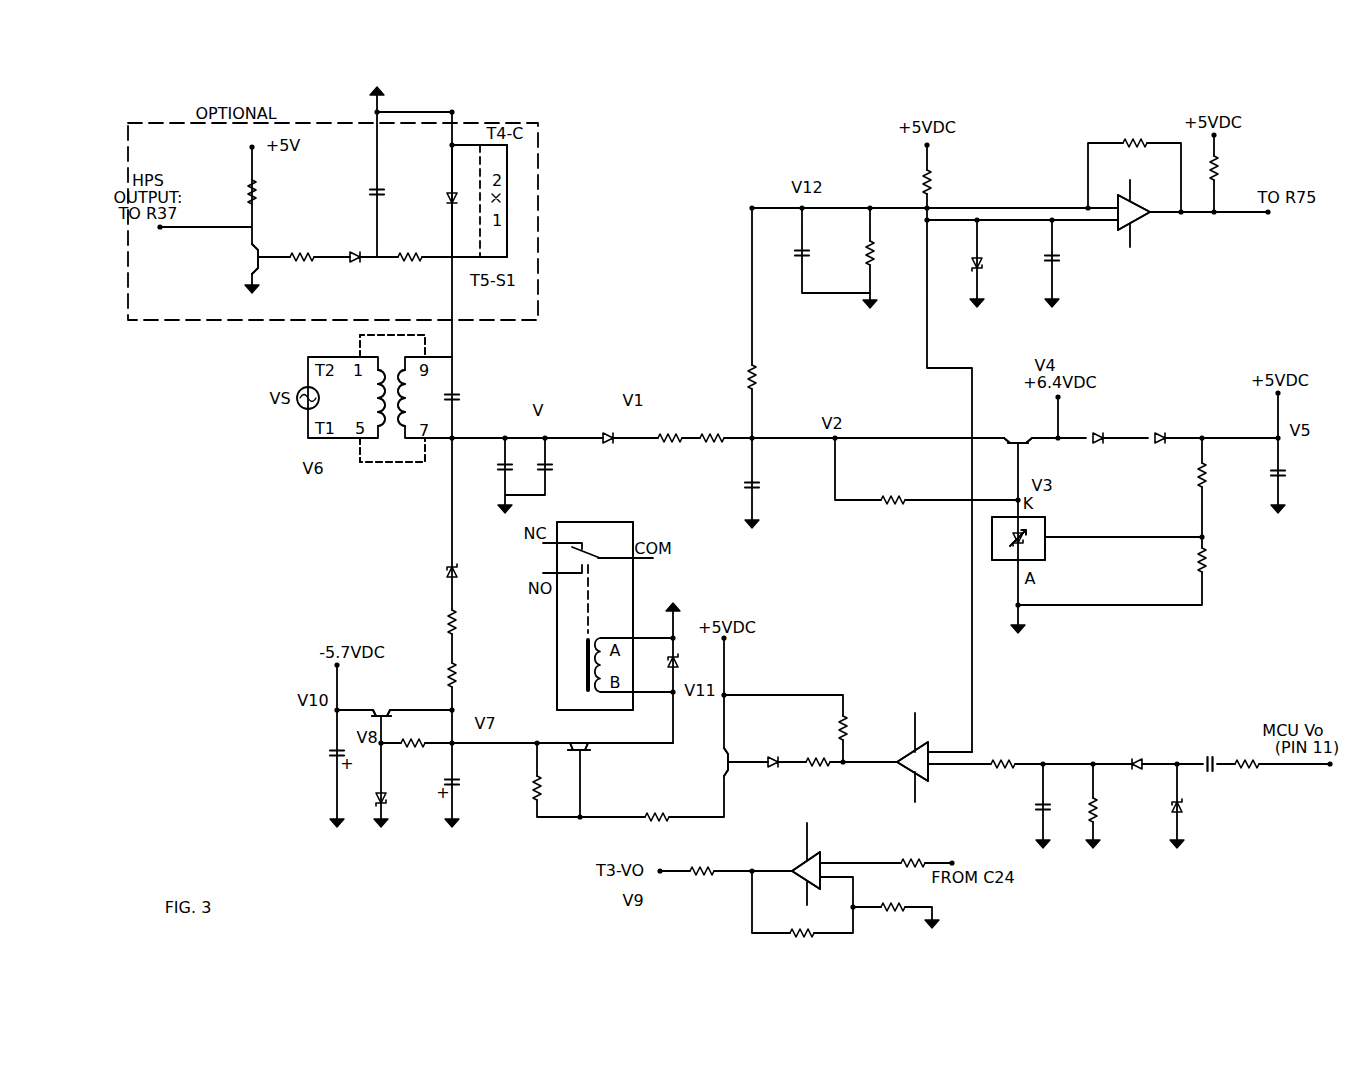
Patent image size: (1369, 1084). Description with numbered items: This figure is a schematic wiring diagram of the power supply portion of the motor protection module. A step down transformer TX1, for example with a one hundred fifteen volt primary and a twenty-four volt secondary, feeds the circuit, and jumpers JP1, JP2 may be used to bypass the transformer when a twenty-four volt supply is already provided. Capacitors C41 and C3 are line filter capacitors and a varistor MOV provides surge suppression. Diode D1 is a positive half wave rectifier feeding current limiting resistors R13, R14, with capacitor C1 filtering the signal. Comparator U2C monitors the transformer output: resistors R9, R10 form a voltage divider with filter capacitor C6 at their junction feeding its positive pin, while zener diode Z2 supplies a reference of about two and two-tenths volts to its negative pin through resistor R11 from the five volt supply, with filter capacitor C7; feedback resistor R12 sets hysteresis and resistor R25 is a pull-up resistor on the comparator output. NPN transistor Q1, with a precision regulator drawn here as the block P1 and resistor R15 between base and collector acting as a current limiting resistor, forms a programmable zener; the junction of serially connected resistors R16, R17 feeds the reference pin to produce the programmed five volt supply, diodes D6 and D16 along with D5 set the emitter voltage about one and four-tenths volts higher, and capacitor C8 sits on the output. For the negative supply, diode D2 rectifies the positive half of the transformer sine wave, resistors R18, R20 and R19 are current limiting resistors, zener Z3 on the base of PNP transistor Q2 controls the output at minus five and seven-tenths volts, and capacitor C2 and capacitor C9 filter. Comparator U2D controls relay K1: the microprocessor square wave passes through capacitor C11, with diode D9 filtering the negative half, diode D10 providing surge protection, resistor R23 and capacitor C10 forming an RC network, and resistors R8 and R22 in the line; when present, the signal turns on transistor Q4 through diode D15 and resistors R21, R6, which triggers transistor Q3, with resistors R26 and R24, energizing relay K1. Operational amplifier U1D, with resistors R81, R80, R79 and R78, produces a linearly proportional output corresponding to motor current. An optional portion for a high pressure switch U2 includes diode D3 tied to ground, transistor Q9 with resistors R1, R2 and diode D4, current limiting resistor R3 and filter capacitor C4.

The resistor R1 is at (268, 192).
The transistor Q9 is at (238, 259).
The resistor R2 is at (302, 246).
The diode D4 is at (355, 247).
The current limiting resistor R3 is at (410, 246).
The filter capacitor C4 is at (362, 192).
The half wave rectifier diode D3 is at (436, 198).
The high pressure switch U2 is at (494, 201).
The step down transformer TX1 is at (367, 398).
The jumper JP1 is at (392, 345).
The jumper JP2 is at (392, 451).
The line filter capacitor C41 is at (471, 397).
The line filter capacitor C3 is at (491, 467).
The varistor MOV is at (566, 467).
The positive half wave rectifier diode D1 is at (608, 429).
The current limiting resistor R13 is at (669, 429).
The current limiting resistor R14 is at (711, 429).
The voltage divider resistor R9 is at (735, 377).
The filter capacitor C1 is at (767, 485).
The current limiting resistor R15 is at (892, 490).
The filter capacitor C6 is at (788, 253).
The voltage divider resistor R10 is at (849, 251).
The resistor R11 is at (906, 182).
The zener diode Z2 is at (999, 421).
The filter capacitor C7 is at (1067, 258).
The comparator U2C is at (1135, 213).
The feedback resistor R12 is at (1134, 130).
The pull-up resistor R25 is at (1234, 168).
The NPN transistor Q1 is at (1018, 427).
The diode D5 is at (1098, 429).
The diode D16 is at (1160, 429).
The resistor R16 is at (1222, 475).
The resistor R17 is at (1222, 560).
The capacitor C8 is at (1292, 473).
The potentiometer P1 is at (1035, 538).
The rectifier diode D2 is at (437, 573).
The current limiting resistor R18 is at (432, 622).
The current limiting resistor R20 is at (476, 675).
The PNP transistor Q2 is at (382, 700).
The current limiting resistor R19 is at (417, 733).
The capacitor C9 is at (324, 753).
The zener diode Z3 is at (397, 800).
The filter capacitor C2 is at (468, 775).
The resistor R26 is at (517, 792).
The transistor Q3 is at (578, 734).
The resistor R24 is at (654, 807).
The relay K1 is at (595, 604).
The diode D6 is at (688, 662).
The transistor Q4 is at (712, 762).
The diode D15 is at (773, 750).
The resistor R21 is at (822, 774).
The resistor R6 is at (829, 728).
The comparator U2D is at (917, 749).
The resistor R22 is at (1004, 754).
The capacitor C10 is at (1023, 810).
The resistor R23 is at (1112, 810).
The diode D9 is at (1135, 752).
The diode D10 is at (1197, 807).
The capacitor C11 is at (1208, 752).
The resistor R8 is at (1249, 775).
The resistor R81 is at (702, 860).
The operational amplifier U1D is at (805, 859).
The resistor R80 is at (912, 852).
The resistor R79 is at (892, 897).
The resistor R78 is at (801, 943).